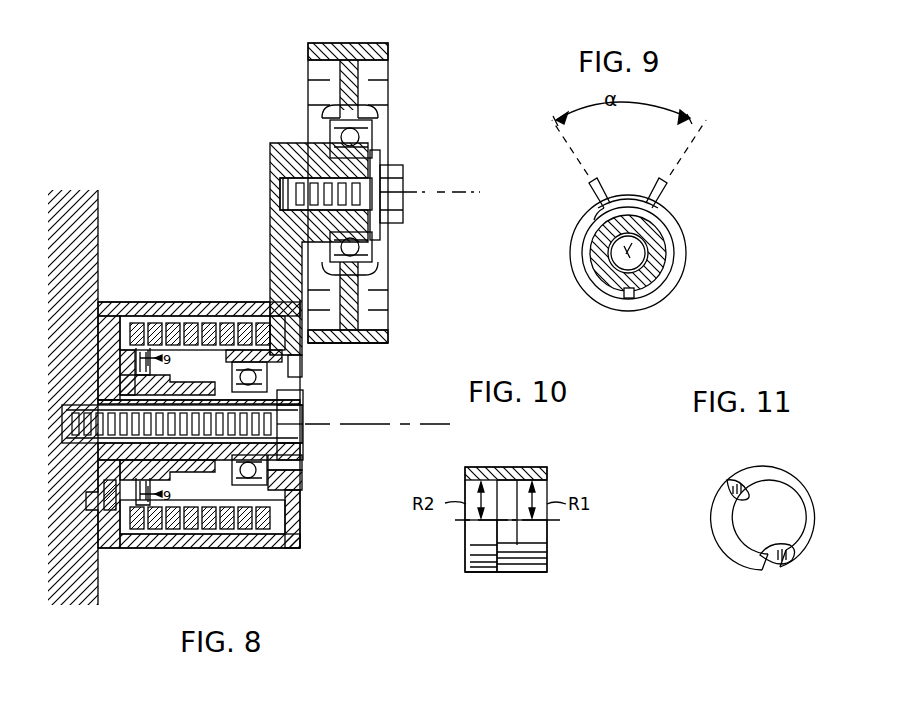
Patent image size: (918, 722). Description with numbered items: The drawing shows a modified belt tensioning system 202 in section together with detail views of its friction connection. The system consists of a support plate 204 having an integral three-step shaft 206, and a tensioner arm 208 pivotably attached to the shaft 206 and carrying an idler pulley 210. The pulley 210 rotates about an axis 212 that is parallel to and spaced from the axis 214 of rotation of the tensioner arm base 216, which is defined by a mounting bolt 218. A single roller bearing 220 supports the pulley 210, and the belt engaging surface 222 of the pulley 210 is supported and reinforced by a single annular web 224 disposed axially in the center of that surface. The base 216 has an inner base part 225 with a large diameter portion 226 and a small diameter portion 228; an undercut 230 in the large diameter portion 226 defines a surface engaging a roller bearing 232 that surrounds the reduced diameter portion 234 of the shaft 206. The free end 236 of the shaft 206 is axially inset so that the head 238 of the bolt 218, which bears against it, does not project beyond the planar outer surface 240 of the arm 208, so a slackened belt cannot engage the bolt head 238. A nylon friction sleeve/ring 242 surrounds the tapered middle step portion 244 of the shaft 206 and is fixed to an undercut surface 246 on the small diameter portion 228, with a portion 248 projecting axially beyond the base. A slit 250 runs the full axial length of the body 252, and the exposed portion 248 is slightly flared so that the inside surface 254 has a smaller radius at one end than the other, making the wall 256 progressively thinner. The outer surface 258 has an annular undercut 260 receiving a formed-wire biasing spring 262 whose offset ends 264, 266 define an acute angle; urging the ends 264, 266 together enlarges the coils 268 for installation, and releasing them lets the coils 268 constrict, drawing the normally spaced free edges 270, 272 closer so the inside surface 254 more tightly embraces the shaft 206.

In FIG. 8, the belt tensioning system 202 is at (420, 66).
In FIG. 8, the support plate 204 is at (105, 470).
In FIG. 8, the shaft 206 is at (135, 452).
In FIG. 8, the tensioner arm 208 is at (283, 228).
In FIG. 8, the idler pulley 210 is at (335, 43).
In FIG. 8, the axis 212 is at (425, 190).
In FIG. 8, the axis of rotation 214 is at (378, 426).
In FIG. 8, the tensioner arm base 216 is at (178, 308).
In FIG. 8, the mounting bolt 218 is at (303, 414).
In FIG. 8, the roller bearing 220 is at (370, 128).
In FIG. 8, the belt engaging surface 222 is at (380, 345).
In FIG. 8, the annular web 224 is at (362, 300).
In FIG. 8, the inner base part 225 is at (228, 362).
In FIG. 8, the large diameter portion 226 is at (247, 356).
In FIG. 8, the small diameter portion 228 is at (165, 375).
In FIG. 8, the undercut 230 is at (303, 366).
In FIG. 8, the roller bearing 232 is at (285, 490).
In FIG. 8, the reduced diameter portion 234 is at (268, 475).
In FIG. 8, the free end 236 is at (302, 460).
In FIG. 8, the bolt head 238 is at (303, 436).
In FIG. 8, the planar outer surface 240 is at (300, 525).
In FIG. 8, the friction sleeve/ring 242 is at (100, 504).
In FIG. 9, the friction sleeve/ring 242 is at (668, 230).
In FIG. 10, the friction sleeve/ring 242 is at (536, 467).
In FIG. 11, the friction sleeve/ring 242 is at (776, 480).
In FIG. 8, the middle step portion 244 is at (140, 397).
In FIG. 8, the undercut surface 246 is at (216, 536).
In FIG. 8, the projecting portion 248 is at (126, 380).
In FIG. 10, the projecting portion 248 is at (506, 578).
In FIG. 9, the slit 250 is at (631, 298).
In FIG. 11, the slit 250 is at (780, 570).
In FIG. 8, the body 252 is at (146, 535).
In FIG. 10, the inside surface 254 is at (517, 490).
In FIG. 11, the inside surface 254 is at (728, 480).
In FIG. 10, the wall 256 is at (503, 467).
In FIG. 10, the outer surface 258 is at (535, 575).
In FIG. 10, the annular undercut 260 is at (482, 575).
In FIG. 8, the biasing spring 262 is at (133, 530).
In FIG. 9, the biasing spring 262 is at (624, 200).
In FIG. 9, the spring end 264 is at (585, 196).
In FIG. 9, the spring end 266 is at (672, 188).
In FIG. 9, the spring coils 268 is at (682, 268).
In FIG. 11, the free edge 270 is at (796, 546).
In FIG. 11, the free edge 272 is at (760, 572).